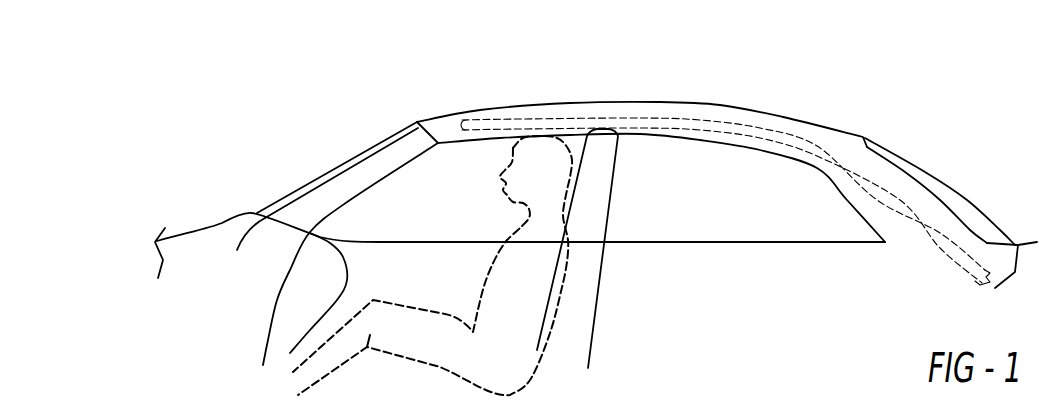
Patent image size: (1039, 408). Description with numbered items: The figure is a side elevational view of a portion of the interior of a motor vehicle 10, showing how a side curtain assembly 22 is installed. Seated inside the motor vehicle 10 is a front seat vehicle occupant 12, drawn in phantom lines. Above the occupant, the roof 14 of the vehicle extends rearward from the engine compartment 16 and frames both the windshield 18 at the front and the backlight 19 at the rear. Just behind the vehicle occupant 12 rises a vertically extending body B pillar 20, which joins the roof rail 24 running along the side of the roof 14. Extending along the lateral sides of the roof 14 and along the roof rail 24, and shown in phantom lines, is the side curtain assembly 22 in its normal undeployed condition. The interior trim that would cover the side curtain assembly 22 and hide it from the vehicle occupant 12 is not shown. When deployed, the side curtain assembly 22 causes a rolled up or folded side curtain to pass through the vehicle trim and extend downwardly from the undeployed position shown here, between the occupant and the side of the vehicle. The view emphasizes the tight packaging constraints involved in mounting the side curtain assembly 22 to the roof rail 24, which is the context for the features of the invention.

The motor vehicle 10 is at (700, 63).
The vehicle occupant 12 is at (513, 157).
The roof 14 is at (765, 108).
The engine compartment 16 is at (222, 223).
The windshield 18 is at (362, 153).
The backlight 19 is at (913, 158).
The B pillar 20 is at (618, 160).
The side curtain assembly 22 is at (633, 118).
The roof rail 24 is at (725, 142).